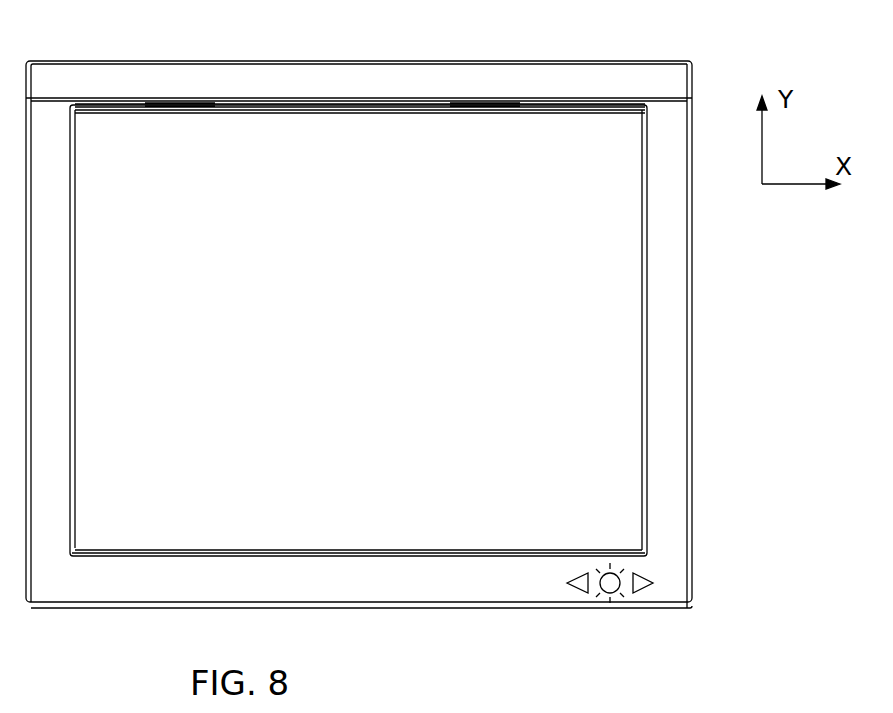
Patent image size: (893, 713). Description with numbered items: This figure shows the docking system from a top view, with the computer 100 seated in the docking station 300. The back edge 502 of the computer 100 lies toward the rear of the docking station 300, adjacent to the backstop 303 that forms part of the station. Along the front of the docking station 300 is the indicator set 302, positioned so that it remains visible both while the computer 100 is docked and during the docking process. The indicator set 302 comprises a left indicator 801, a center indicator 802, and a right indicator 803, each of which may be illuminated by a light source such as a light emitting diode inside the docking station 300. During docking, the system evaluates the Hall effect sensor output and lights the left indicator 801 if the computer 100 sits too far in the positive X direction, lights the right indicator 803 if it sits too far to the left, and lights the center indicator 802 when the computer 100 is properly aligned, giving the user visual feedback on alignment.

The computer 100 is at (364, 337).
The docking station 300 is at (677, 288).
The indicator set 302 is at (610, 630).
The backstop 303 is at (167, 80).
The back edge 502 is at (290, 100).
The left indicator 801 is at (578, 595).
The center indicator 802 is at (605, 595).
The right indicator 803 is at (640, 595).